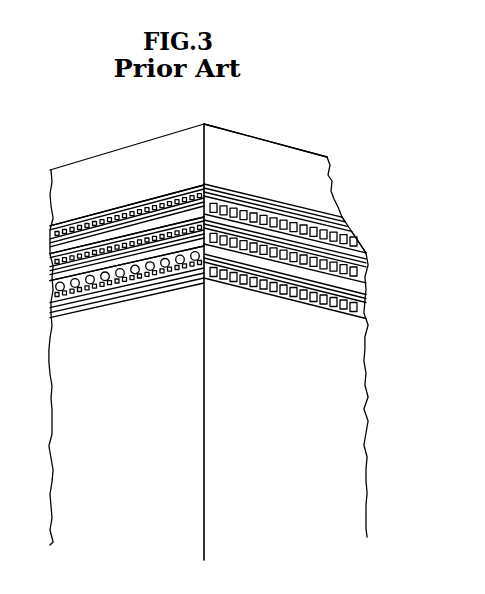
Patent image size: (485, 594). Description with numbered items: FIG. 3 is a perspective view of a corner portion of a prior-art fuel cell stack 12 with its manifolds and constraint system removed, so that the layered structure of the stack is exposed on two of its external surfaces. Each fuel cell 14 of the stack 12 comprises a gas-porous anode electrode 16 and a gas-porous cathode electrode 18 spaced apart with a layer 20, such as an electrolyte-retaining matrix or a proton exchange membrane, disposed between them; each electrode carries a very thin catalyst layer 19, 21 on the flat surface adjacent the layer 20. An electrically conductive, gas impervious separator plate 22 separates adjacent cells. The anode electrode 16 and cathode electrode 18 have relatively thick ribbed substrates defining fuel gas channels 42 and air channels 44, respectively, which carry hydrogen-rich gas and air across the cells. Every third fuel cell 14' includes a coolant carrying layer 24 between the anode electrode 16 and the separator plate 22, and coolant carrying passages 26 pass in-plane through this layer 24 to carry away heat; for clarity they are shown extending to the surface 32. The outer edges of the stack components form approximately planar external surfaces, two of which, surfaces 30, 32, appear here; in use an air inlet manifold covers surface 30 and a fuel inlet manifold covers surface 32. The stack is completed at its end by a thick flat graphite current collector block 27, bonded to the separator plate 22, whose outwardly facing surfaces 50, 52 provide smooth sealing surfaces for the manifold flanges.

The stack 12 is at (47, 223).
The fuel cell 14 is at (111, 230).
The fuel cell with coolant layer 14' is at (105, 283).
The anode electrode 16 is at (195, 222).
The cathode electrode 18 is at (305, 222).
The catalyst layer 19 is at (350, 222).
The layer 20 is at (98, 258).
The catalyst layer 21 is at (364, 233).
The separator plate 22 is at (223, 210).
The coolant carrying layer 24 is at (192, 252).
The coolant carrying passages 26 is at (111, 265).
The top current collector block 27 is at (297, 152).
The surface 30 is at (278, 402).
The surface 32 is at (120, 407).
The fuel gas channels 42 is at (138, 208).
The air channels 44 is at (290, 222).
The outwardly facing surface 50 is at (250, 147).
The outwardly facing surface 52 is at (97, 172).